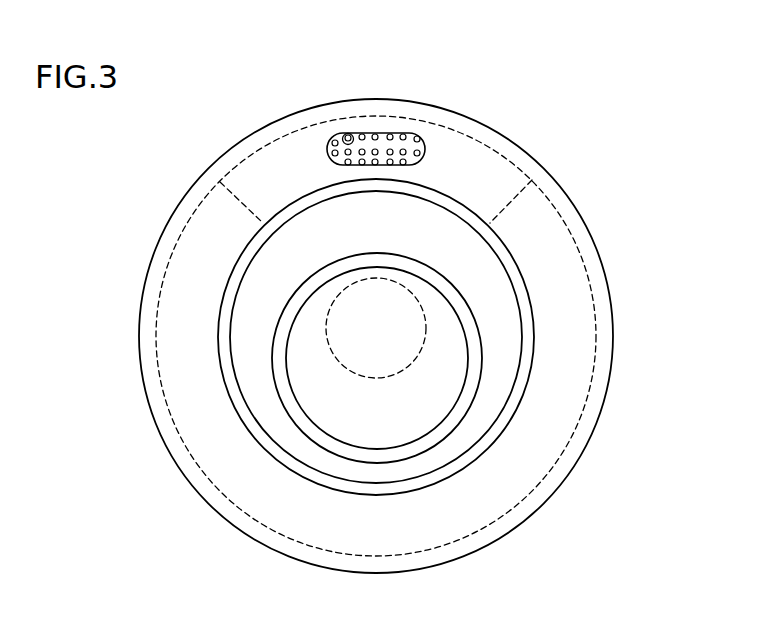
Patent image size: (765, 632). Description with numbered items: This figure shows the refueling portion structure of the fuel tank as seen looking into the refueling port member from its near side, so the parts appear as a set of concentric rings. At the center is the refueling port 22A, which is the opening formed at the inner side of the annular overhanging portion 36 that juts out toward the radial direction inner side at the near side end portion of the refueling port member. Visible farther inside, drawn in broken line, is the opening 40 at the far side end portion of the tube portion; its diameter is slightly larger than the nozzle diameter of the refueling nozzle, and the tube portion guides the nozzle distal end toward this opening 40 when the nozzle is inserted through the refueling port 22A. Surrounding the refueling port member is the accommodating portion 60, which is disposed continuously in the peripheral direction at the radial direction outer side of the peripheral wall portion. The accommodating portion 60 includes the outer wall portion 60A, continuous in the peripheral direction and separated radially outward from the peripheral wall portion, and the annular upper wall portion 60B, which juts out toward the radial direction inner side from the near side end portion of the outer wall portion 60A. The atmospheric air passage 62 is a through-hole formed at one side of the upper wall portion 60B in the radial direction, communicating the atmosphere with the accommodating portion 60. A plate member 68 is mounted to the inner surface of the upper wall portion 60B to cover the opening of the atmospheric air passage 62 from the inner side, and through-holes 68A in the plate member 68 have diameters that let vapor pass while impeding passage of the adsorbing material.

The atmospheric air passage 62 is at (345, 136).
The through-holes 68A is at (425, 162).
The plate member 68 is at (464, 130).
The outer wall portion 60A is at (582, 216).
The upper wall portion 60B is at (556, 256).
The accommodating portion 60 is at (432, 336).
The overhanging portion 36 is at (477, 424).
The opening 40 is at (380, 378).
The refueling port 22A is at (368, 452).